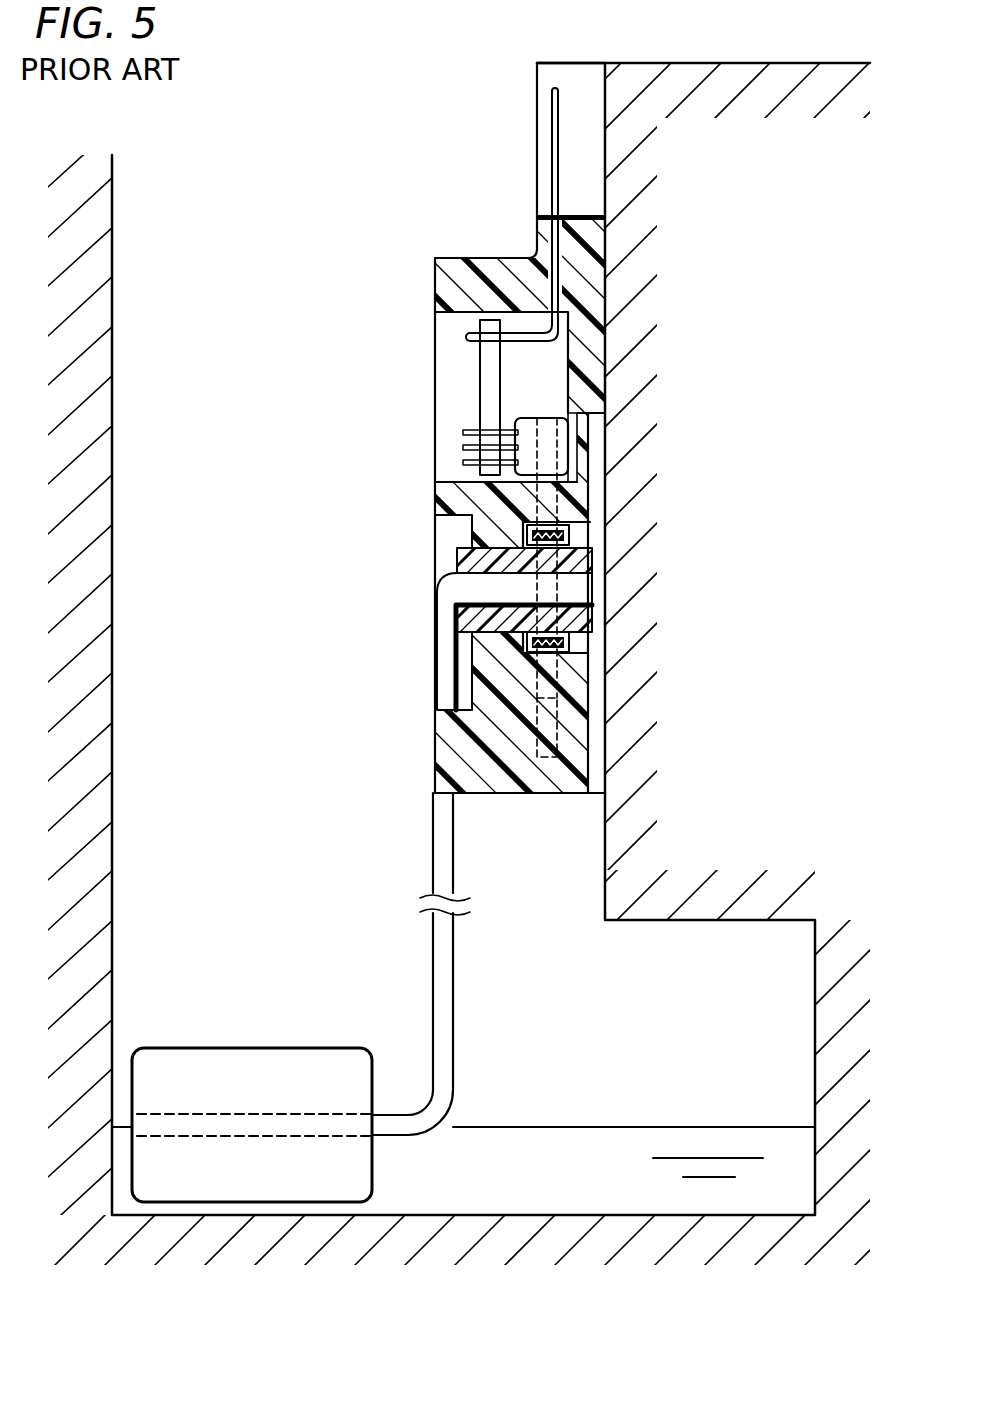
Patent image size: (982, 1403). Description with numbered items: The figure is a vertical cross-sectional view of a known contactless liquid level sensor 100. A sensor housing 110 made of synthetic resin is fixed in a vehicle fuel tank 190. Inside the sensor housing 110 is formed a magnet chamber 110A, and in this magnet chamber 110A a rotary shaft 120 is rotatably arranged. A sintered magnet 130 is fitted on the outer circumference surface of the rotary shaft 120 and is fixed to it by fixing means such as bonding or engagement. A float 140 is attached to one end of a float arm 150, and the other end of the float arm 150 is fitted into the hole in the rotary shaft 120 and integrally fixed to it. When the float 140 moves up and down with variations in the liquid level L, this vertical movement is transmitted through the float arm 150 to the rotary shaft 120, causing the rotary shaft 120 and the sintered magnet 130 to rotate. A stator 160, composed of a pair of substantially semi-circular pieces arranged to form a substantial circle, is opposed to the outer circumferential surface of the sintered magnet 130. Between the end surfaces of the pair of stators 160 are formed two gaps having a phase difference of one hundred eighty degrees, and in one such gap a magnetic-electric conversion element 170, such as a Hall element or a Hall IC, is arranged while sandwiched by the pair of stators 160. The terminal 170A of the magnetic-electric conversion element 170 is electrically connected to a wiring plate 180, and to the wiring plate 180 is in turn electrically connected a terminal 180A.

The contactless liquid level sensor 100 is at (272, 133).
The sensor housing 110 is at (445, 290).
The magnet chamber 110A is at (577, 642).
The rotary shaft 120 is at (458, 550).
The sintered magnet 130 is at (567, 530).
The float 140 is at (218, 1048).
The float arm 150 is at (433, 860).
The stator 160 is at (557, 730).
The magnetic-electric conversion element 170 is at (527, 430).
The terminal 170A is at (463, 432).
The wiring plate 180 is at (480, 375).
The terminal 180A is at (558, 143).
The vehicle fuel tank 190 is at (815, 1048).
The liquid level L is at (557, 1118).